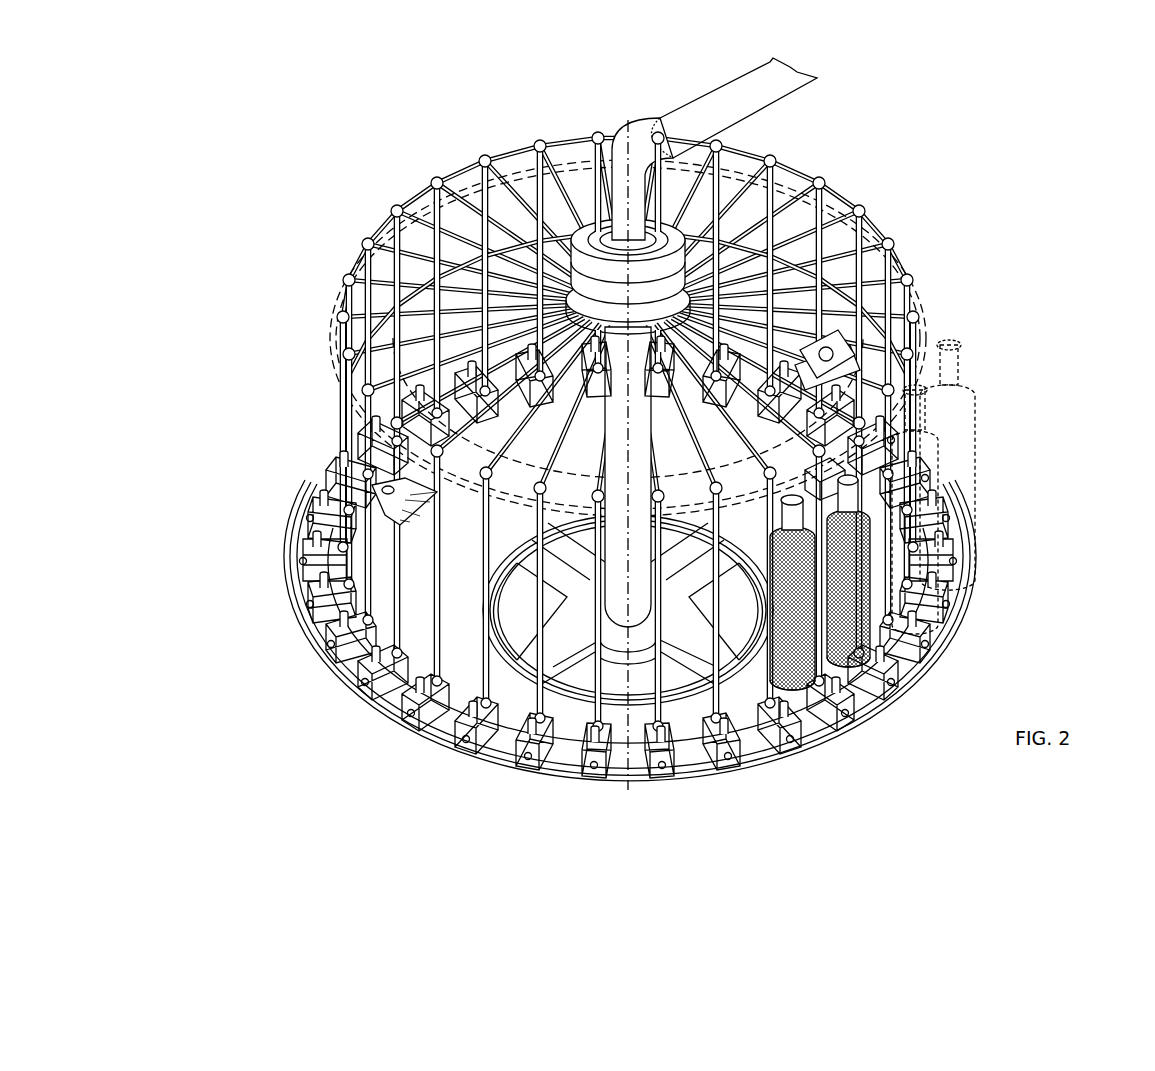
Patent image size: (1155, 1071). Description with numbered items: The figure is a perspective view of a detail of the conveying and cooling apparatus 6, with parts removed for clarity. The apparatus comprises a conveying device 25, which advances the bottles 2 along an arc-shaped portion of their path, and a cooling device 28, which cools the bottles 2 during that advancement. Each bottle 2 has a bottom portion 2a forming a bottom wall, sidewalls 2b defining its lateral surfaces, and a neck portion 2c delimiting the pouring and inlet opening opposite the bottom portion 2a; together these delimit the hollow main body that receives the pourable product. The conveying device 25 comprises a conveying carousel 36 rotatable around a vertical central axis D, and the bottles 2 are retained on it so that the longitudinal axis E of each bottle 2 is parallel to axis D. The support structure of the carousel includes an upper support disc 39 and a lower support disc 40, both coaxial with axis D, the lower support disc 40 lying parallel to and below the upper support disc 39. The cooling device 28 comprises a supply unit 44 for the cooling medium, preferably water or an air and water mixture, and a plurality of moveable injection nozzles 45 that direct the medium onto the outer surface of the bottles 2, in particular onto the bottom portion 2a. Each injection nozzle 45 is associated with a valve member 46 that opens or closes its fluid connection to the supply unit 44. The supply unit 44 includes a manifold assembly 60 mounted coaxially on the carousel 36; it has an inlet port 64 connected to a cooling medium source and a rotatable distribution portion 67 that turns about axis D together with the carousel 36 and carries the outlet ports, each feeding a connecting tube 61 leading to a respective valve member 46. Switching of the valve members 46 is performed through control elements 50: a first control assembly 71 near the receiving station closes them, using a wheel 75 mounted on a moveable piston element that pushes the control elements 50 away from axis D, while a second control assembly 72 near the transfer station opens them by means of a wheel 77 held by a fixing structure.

The bottle 2 is at (909, 538).
The bottom portion 2a is at (940, 623).
The sidewalls 2b is at (970, 388).
The neck portion 2c is at (962, 440).
The conveying and cooling apparatus 6 is at (343, 150).
The conveying device 25 is at (342, 197).
The cooling device 28 is at (266, 640).
The conveying carousel 36 is at (320, 396).
The upper support disc 39 is at (788, 190).
The lower support disc 40 is at (878, 697).
The supply unit 44 is at (646, 118).
The injection nozzle 45 is at (307, 493).
The valve member 46 is at (286, 530).
The control element 50 is at (278, 516).
The manifold assembly 60 is at (588, 196).
The tube 61 is at (834, 212).
The inlet port 64 is at (646, 219).
The rotatable distribution portion 67 is at (547, 212).
The first control assembly 71 is at (409, 537).
The second control assembly 72 is at (845, 342).
The wheel 75 is at (384, 508).
The wheel 77 is at (821, 478).
The central axis D is at (624, 170).
The longitudinal axis E is at (990, 471).